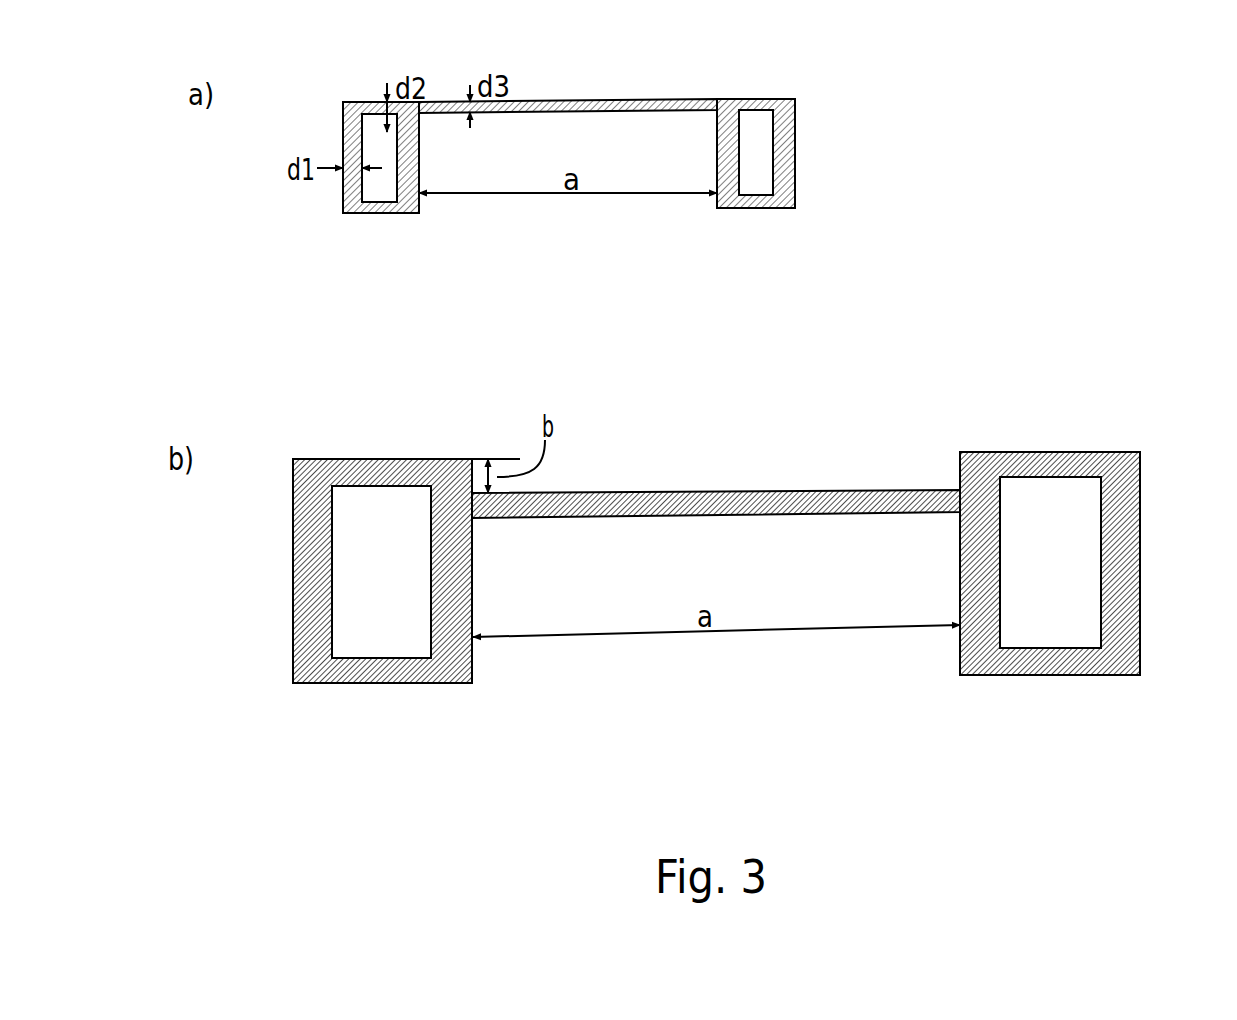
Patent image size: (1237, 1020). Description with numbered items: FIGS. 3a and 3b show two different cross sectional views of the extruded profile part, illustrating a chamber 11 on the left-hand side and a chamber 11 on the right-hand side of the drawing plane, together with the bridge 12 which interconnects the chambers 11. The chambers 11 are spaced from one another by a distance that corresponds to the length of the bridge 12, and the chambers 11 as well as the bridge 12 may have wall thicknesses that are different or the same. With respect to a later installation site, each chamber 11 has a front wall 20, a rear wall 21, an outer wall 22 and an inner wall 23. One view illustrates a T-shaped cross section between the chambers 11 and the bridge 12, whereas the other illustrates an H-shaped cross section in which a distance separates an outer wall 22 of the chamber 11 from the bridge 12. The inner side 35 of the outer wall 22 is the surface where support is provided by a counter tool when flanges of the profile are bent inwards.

In FIG. 3a, the chamber 11 is at (372, 130).
In FIG. 3b, the chamber 11 is at (352, 508).
In FIG. 3a, the bridge 12 is at (537, 102).
In FIG. 3b, the bridge 12 is at (710, 498).
In FIG. 3b, the front wall 20 is at (691, 573).
In FIG. 3b, the rear wall 21 is at (472, 580).
In FIG. 3b, the outer wall 22 is at (377, 459).
In FIG. 3b, the inner wall 23 is at (377, 683).
In FIG. 3b, the inner side 35 is at (373, 498).